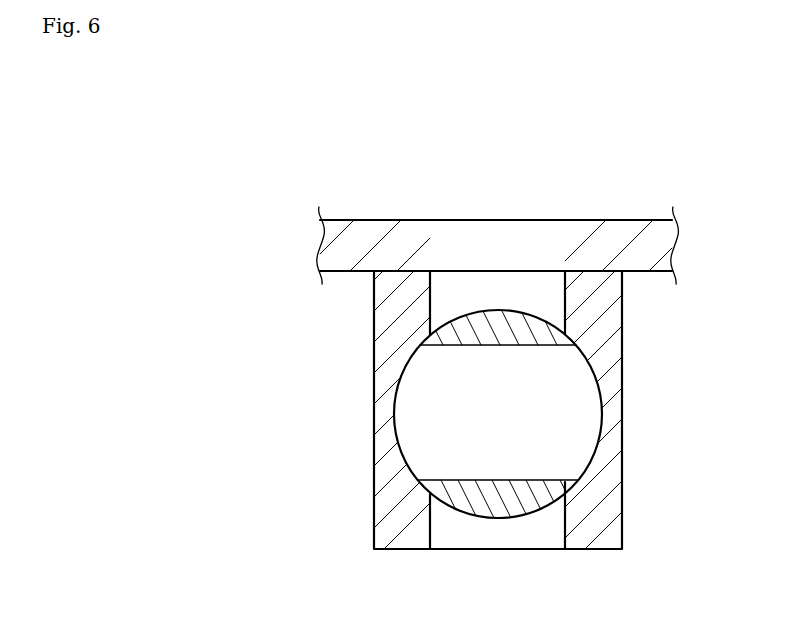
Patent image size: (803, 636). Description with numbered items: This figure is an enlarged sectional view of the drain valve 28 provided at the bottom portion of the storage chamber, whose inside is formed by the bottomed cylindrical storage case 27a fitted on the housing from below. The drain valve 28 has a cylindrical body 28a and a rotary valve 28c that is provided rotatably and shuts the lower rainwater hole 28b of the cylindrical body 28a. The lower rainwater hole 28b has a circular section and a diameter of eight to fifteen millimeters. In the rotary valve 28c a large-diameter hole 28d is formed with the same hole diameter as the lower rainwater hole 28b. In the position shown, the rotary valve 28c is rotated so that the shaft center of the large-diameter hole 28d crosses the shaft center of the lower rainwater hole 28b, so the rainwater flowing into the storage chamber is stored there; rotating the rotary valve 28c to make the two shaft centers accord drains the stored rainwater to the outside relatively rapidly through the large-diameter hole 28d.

The storage case 27a is at (643, 272).
The drain valve 28 is at (325, 412).
The cylindrical body 28a is at (623, 399).
The lower rainwater hole 28b is at (567, 531).
The rotary valve 28c is at (466, 517).
The large-diameter hole 28d is at (560, 468).